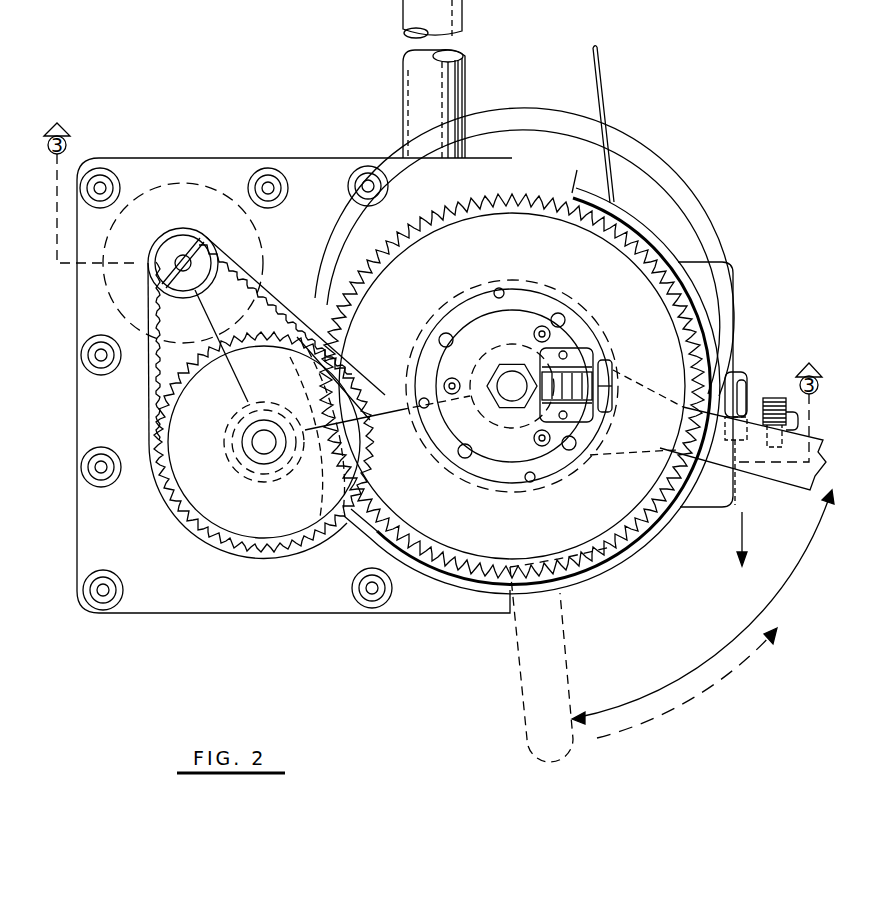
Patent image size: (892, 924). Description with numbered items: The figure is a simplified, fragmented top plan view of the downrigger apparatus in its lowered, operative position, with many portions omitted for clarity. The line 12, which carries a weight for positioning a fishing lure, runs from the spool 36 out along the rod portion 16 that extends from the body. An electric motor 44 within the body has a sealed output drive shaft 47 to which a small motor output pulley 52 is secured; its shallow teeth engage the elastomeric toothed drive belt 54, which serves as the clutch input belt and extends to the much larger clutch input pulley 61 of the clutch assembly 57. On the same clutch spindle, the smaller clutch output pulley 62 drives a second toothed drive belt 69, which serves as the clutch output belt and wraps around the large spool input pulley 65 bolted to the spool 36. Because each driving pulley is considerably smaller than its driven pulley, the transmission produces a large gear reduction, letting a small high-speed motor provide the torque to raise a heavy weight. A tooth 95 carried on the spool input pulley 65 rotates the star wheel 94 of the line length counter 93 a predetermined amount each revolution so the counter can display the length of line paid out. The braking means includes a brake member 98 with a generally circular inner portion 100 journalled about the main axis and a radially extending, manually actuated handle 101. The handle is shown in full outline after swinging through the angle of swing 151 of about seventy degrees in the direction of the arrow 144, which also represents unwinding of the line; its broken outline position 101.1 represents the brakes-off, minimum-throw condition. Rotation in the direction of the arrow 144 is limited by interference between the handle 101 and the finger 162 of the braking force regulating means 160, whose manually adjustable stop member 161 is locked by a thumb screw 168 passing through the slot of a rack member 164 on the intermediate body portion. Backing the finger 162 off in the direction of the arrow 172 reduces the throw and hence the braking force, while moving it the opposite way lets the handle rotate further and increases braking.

The line 12 is at (465, 42).
The rod portion 16 is at (415, 73).
The spool 36 is at (625, 560).
The electric motor 44 is at (183, 183).
The output drive shaft 47 is at (186, 255).
The motor output pulley 52 is at (165, 236).
The drive belt 54 is at (145, 370).
The clutch assembly 57 is at (254, 507).
The clutch input pulley 61 is at (212, 495).
The clutch output pulley 62 is at (240, 444).
The spool input pulley 65 is at (607, 253).
The drive belt 69 is at (358, 535).
The line length counter 93 is at (575, 370).
The star wheel 94 is at (607, 402).
The tooth 95 is at (500, 290).
The brake member 98 is at (620, 457).
The inner portion 100 is at (492, 490).
The handle 101 is at (810, 488).
The broken outline position of the brake handle 101.1 is at (542, 665).
The arrow 144 is at (705, 690).
The angle of swing 151 is at (778, 595).
The braking force regulating means 160 is at (771, 408).
The stop member 161 is at (745, 395).
The finger 162 is at (740, 372).
The rack member 164 is at (727, 283).
The thumb screw 168 is at (790, 448).
The arrow 172 is at (740, 515).